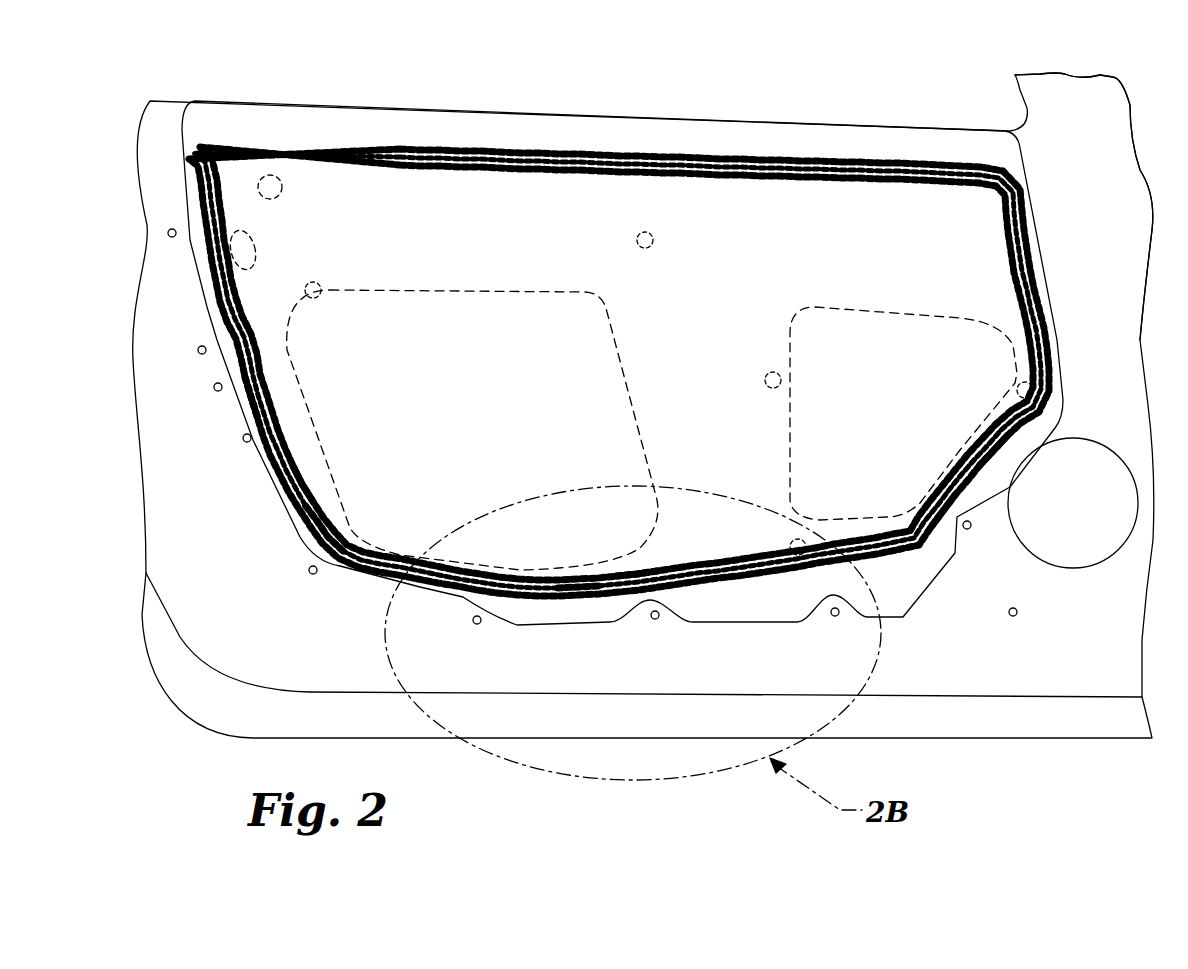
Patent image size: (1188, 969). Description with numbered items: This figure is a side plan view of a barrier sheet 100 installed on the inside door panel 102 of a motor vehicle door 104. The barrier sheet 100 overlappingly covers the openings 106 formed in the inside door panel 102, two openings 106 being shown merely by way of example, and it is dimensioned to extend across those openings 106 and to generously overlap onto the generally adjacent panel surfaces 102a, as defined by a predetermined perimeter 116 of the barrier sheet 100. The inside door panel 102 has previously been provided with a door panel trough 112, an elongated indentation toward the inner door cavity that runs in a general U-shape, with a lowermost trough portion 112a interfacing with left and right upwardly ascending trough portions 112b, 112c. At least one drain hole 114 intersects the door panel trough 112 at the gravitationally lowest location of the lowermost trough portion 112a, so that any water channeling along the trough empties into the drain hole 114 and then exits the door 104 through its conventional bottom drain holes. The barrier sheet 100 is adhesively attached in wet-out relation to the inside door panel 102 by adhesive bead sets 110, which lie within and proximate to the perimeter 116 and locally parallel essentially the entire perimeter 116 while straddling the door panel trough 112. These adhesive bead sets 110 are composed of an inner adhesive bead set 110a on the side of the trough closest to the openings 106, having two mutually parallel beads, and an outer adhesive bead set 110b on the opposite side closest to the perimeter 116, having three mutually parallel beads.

The barrier sheet 100 is at (639, 364).
The inside door panel 102 is at (942, 671).
The panel surfaces 102a is at (1060, 327).
The motor vehicle door 104 is at (1130, 111).
The openings 106 is at (807, 403).
The adhesive bead set 110 is at (353, 573).
The inner adhesive bead set 110a is at (343, 507).
The outer adhesive bead set 110b is at (293, 498).
The door panel trough 112 is at (940, 540).
The lowermost trough portion 112a is at (673, 607).
The left upwardly ascending trough portion 112b is at (250, 415).
The right upwardly ascending trough portion 112c is at (990, 483).
The drain hole 114 is at (573, 588).
The perimeter 116 is at (1042, 252).